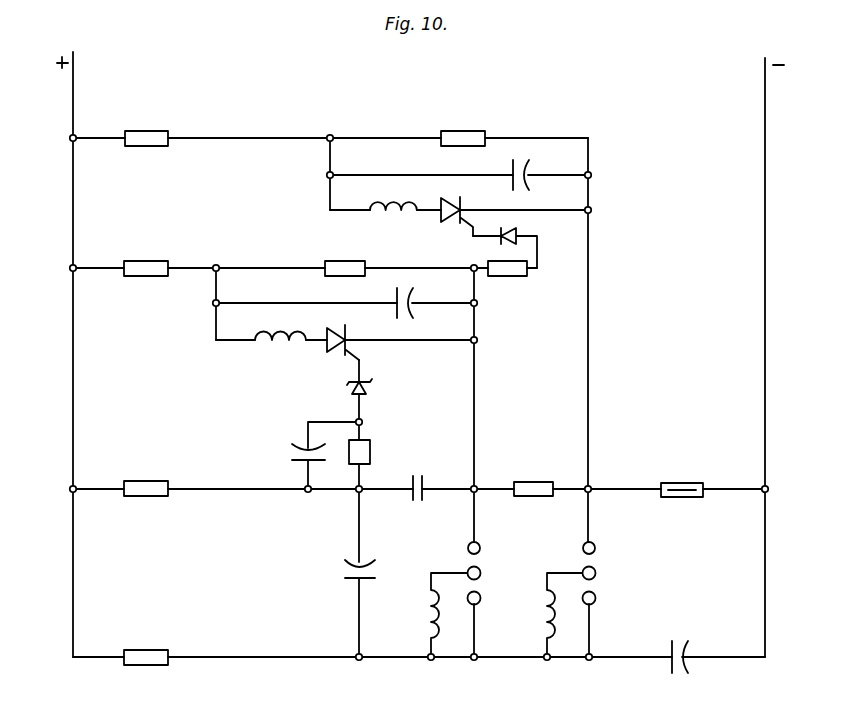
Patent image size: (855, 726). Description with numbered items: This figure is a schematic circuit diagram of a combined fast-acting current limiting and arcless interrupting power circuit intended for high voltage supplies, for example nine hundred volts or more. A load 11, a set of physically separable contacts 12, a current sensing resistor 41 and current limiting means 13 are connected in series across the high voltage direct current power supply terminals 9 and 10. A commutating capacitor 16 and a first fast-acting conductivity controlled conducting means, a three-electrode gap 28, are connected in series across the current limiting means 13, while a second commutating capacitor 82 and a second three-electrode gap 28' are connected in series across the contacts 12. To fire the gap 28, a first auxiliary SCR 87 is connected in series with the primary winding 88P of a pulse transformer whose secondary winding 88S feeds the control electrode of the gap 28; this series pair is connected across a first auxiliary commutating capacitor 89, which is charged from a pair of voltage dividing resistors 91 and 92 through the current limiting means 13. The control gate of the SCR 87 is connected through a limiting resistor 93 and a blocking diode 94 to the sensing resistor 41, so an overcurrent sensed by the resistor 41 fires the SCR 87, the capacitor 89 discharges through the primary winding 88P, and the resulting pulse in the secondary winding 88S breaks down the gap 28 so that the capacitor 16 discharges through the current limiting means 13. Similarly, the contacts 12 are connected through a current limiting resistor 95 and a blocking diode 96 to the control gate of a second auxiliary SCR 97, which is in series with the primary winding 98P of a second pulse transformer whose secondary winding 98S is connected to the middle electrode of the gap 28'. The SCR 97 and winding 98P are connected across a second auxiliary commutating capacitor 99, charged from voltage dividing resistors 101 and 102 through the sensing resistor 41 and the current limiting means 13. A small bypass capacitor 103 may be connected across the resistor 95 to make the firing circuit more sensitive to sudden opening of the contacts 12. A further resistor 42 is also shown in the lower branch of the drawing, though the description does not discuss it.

The direct current power supply terminal 9 is at (72, 98).
The direct current power supply terminal 10 is at (765, 103).
The voltage dividing resistor 91 is at (146, 131).
The voltage dividing resistor 92 is at (463, 131).
The first auxiliary commutating capacitor 89 is at (528, 172).
The first auxiliary SCR 87 is at (462, 200).
The primary winding 88P is at (393, 225).
The blocking diode 94 is at (518, 232).
The limiting resistor 93 is at (520, 276).
The voltage dividing resistor 101 is at (146, 261).
The voltage dividing resistor 102 is at (355, 253).
The second auxiliary commutating capacitor 99 is at (415, 300).
The primary winding 98P is at (280, 354).
The second auxiliary SCR 97 is at (348, 331).
The blocking diode 96 is at (371, 389).
The current limiting resistor 95 is at (370, 452).
The bypass capacitor 103 is at (314, 455).
The second commutating capacitor 82 is at (350, 580).
The load 11 is at (146, 481).
The set of contacts 12 is at (424, 484).
The current sensing resistor 41 is at (533, 482).
The current limiting means 13 is at (689, 483).
The resistor 42 is at (150, 643).
The commutating capacitor 16 is at (688, 652).
The second three-electrode gap 28' is at (493, 596).
The three-electrode gap 28 is at (605, 596).
The secondary winding 98S is at (428, 594).
The secondary winding 88S is at (545, 622).